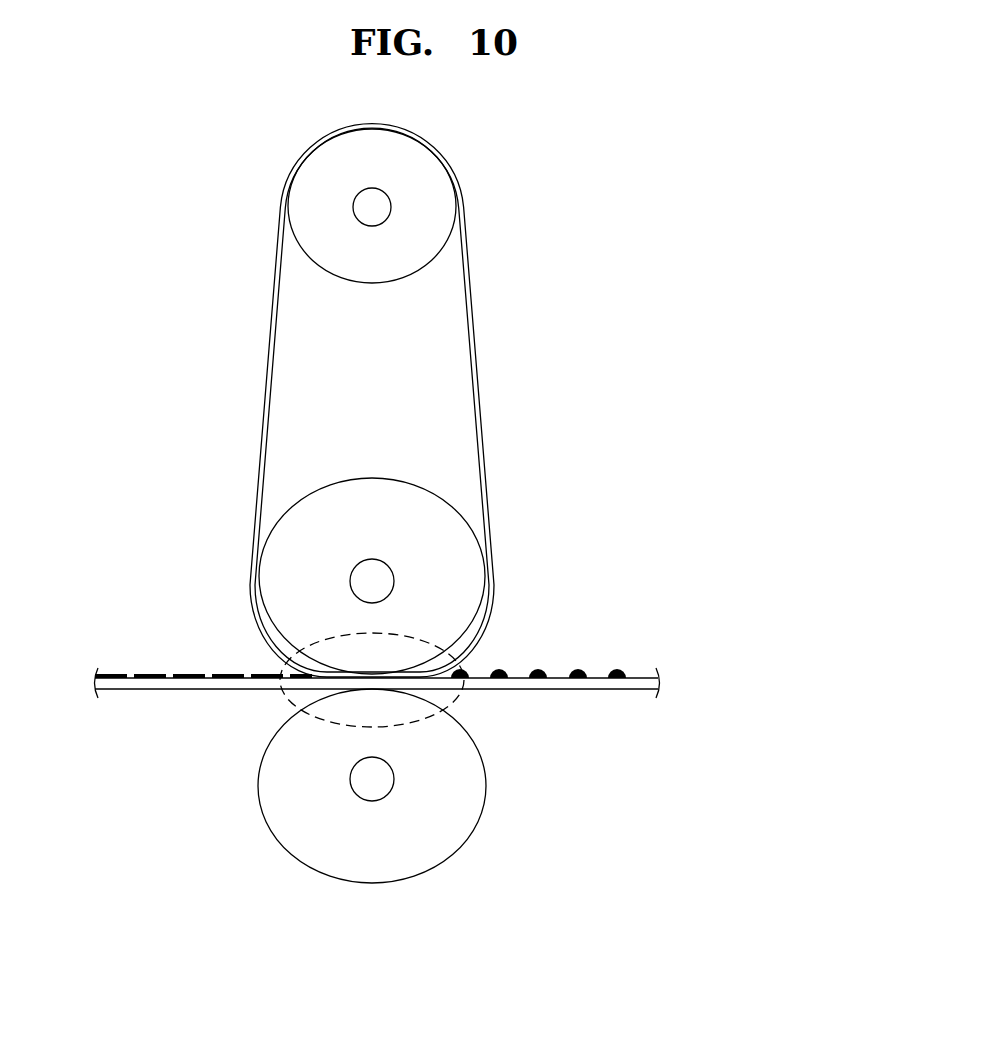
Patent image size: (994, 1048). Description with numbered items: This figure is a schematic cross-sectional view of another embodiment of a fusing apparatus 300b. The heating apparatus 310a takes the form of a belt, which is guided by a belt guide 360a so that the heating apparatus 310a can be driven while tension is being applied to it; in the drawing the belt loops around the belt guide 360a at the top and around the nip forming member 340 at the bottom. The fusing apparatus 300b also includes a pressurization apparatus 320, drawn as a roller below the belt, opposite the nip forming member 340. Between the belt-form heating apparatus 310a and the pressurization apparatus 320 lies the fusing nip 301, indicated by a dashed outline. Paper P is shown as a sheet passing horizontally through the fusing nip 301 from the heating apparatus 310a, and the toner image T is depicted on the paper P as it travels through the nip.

The fusing apparatus 300b is at (704, 214).
The belt guide 360a is at (423, 188).
The heating apparatus 310a is at (483, 417).
The nip forming member 340 is at (445, 547).
The fusing nip 301 is at (433, 648).
The pressurization apparatus 320 is at (473, 831).
The paper P is at (600, 690).
The toner image T is at (625, 672).